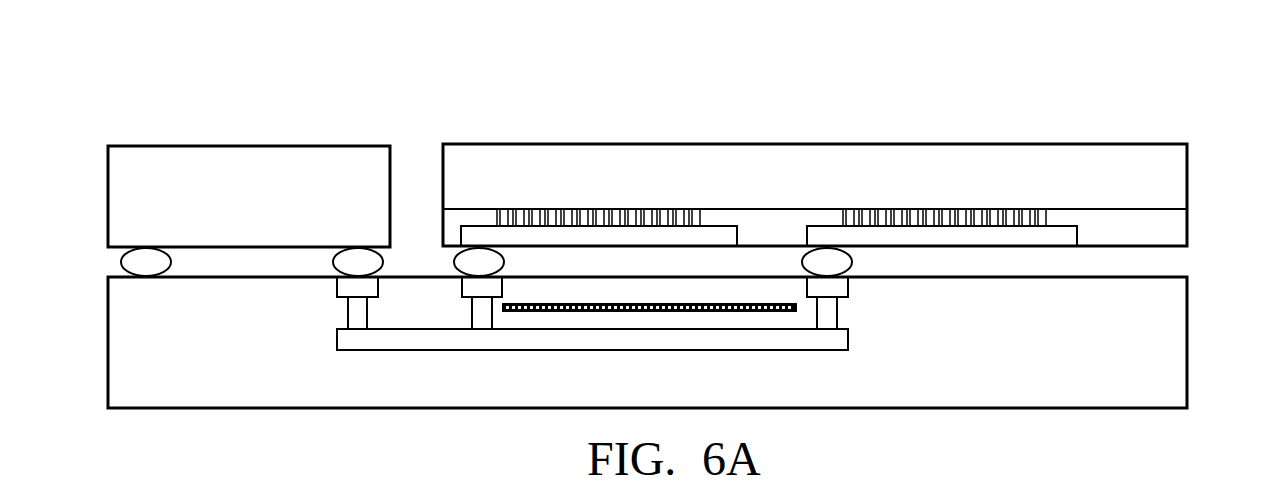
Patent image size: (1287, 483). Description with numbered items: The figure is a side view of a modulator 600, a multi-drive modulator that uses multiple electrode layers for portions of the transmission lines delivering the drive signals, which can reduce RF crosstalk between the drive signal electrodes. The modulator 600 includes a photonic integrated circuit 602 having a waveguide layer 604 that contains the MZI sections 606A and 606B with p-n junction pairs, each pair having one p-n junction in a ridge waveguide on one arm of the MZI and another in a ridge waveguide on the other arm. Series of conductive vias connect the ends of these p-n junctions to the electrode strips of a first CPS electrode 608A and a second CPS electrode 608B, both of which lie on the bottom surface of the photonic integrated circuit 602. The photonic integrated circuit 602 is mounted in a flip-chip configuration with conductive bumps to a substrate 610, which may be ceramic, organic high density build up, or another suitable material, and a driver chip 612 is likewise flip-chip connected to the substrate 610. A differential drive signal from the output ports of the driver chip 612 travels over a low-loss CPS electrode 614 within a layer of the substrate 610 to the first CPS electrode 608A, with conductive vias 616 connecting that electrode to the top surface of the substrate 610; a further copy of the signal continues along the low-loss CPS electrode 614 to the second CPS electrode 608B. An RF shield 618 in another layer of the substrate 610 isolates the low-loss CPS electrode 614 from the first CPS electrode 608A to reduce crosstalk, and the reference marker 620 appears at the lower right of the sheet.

The modulator 600 is at (1126, 72).
The photonic integrated circuit 602 is at (865, 210).
The waveguide layer 604 is at (1190, 209).
The MZI section 606A is at (596, 181).
The MZI section 606B is at (940, 181).
The first CPS electrode 608A is at (678, 250).
The second CPS electrode 608B is at (1007, 250).
The substrate 610 is at (1150, 319).
The driver chip 612 is at (368, 184).
The low-loss CPS electrode 614 is at (560, 350).
The conductive vias 616 is at (348, 303).
The RF shield 618 is at (780, 313).
The board edge 620 is at (1148, 482).